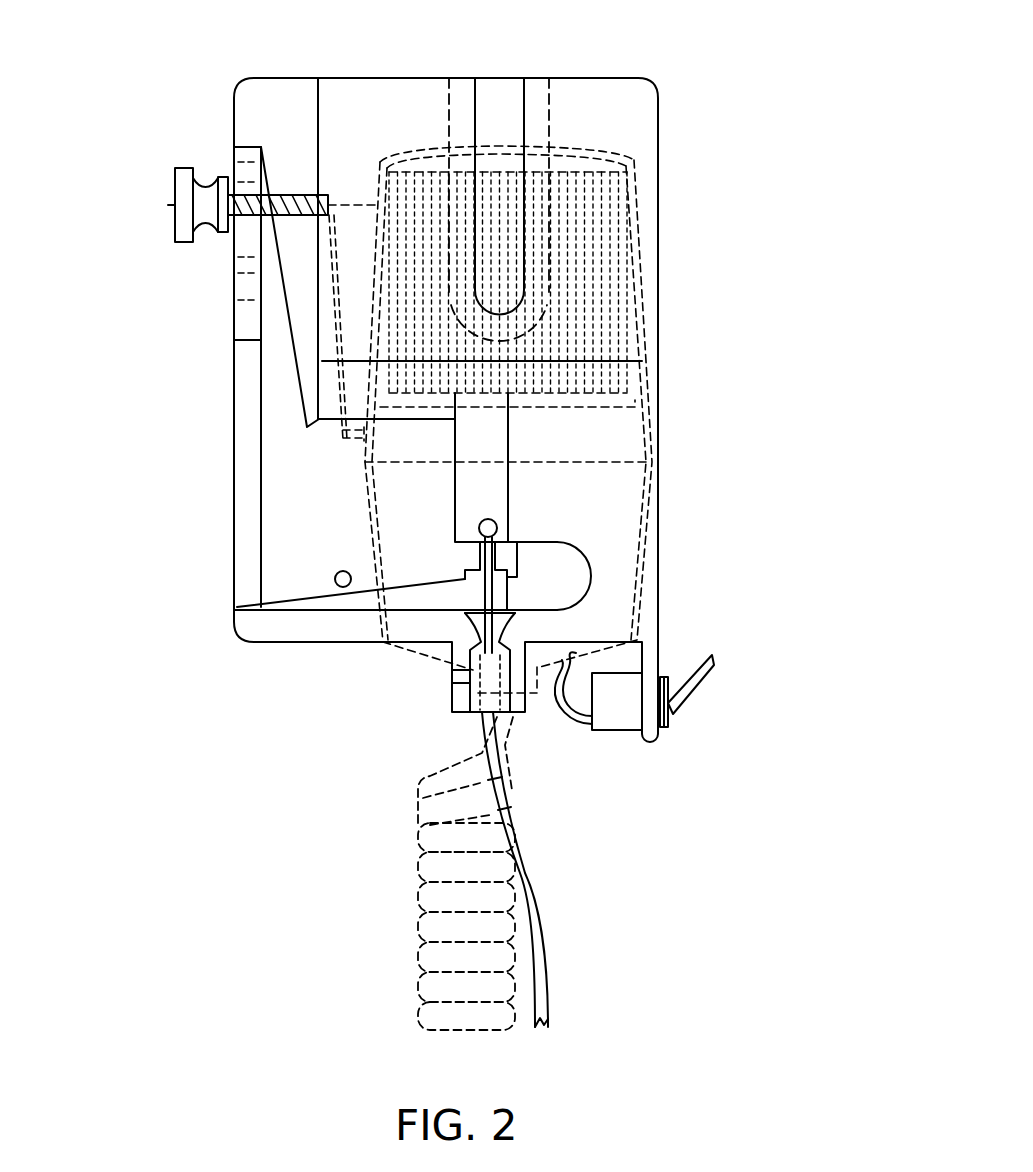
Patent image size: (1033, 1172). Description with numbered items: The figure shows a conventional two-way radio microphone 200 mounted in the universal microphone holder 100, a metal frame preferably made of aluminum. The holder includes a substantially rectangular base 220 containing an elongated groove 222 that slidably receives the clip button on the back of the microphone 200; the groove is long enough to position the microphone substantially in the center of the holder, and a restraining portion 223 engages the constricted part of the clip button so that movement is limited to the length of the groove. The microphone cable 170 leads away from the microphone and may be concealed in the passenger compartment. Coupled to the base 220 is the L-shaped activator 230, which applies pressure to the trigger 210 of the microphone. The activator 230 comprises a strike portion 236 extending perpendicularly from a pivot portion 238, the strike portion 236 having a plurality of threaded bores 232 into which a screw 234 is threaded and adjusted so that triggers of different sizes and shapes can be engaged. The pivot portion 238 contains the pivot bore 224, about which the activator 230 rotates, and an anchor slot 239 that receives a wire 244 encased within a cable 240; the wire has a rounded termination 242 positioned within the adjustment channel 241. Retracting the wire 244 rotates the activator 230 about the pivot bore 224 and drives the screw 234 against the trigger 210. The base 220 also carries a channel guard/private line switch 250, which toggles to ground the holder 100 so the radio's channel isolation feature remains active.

The universal microphone holder 100 is at (745, 94).
The microphone cable 170 is at (430, 855).
The microphone 200 is at (655, 418).
The trigger 210 is at (340, 382).
The base 220 is at (592, 100).
The elongated groove 222 is at (496, 100).
The restraining portion 223 is at (462, 84).
The pivot bore 224 is at (335, 588).
The activator 230 is at (277, 398).
The threaded bores 232 is at (243, 288).
The screw 234 is at (175, 204).
The strike portion 236 is at (236, 266).
The pivot portion 238 is at (417, 567).
The anchor slot 239 is at (465, 578).
The cable 240 is at (543, 920).
The adjustment channel 241 is at (488, 466).
The rounded termination 242 is at (497, 525).
The wire 244 is at (497, 628).
The channel guard/private line switch 250 is at (700, 688).